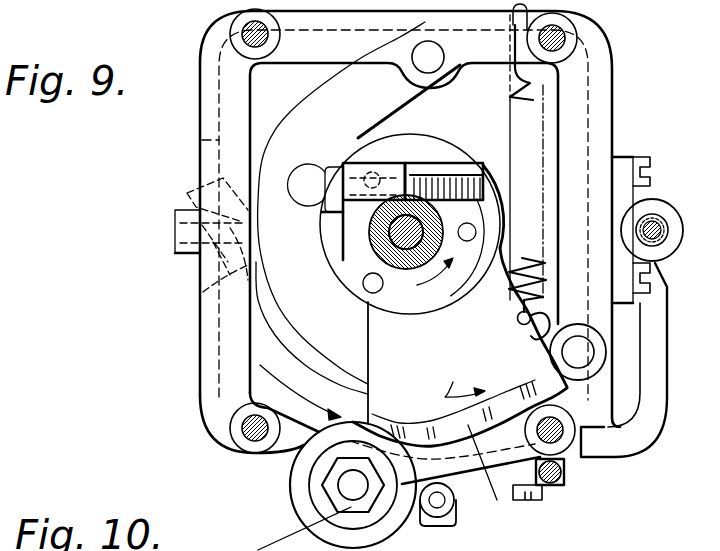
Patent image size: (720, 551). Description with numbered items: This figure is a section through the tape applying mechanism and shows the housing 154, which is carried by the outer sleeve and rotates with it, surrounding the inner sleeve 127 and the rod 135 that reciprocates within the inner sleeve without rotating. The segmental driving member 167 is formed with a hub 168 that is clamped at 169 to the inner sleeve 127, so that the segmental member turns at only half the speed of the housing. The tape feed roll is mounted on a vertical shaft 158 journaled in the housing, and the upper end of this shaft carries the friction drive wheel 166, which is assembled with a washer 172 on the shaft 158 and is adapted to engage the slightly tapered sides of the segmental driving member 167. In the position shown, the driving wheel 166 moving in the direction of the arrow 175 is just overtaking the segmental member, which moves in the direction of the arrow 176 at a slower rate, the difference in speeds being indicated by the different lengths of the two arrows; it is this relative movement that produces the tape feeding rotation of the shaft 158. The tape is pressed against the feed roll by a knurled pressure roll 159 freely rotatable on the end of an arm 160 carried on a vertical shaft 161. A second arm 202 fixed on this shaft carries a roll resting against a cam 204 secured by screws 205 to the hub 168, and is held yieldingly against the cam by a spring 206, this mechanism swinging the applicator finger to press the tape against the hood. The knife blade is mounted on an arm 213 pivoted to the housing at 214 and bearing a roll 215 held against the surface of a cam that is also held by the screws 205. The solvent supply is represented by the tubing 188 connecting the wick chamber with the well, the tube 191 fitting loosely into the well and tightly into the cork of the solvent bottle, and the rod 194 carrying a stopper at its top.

The housing 154 is at (598, 98).
The arm 213 is at (334, 93).
The pivot 214 is at (426, 62).
The spring 206 is at (514, 93).
The clamp 169 is at (416, 160).
The cam 204 is at (347, 232).
The roll 215 is at (320, 137).
The hub 168 is at (427, 293).
The inner sleeve 127 is at (396, 256).
The rod 135 is at (404, 232).
The screws 205 is at (373, 292).
The second arm 202 is at (542, 338).
The vertical shaft 161 is at (576, 353).
The arrow 176 is at (458, 420).
The arrow 175 is at (287, 378).
The washer 172 is at (318, 483).
The vertical shaft 158 is at (352, 486).
The friction drive wheel 166 is at (388, 533).
The knurled pressure roll 159 is at (460, 527).
The arm 160 is at (523, 492).
The segmental driving member 167 is at (497, 500).
The tubing 188 is at (630, 440).
The tube 191 is at (655, 230).
The rod 194 is at (660, 238).